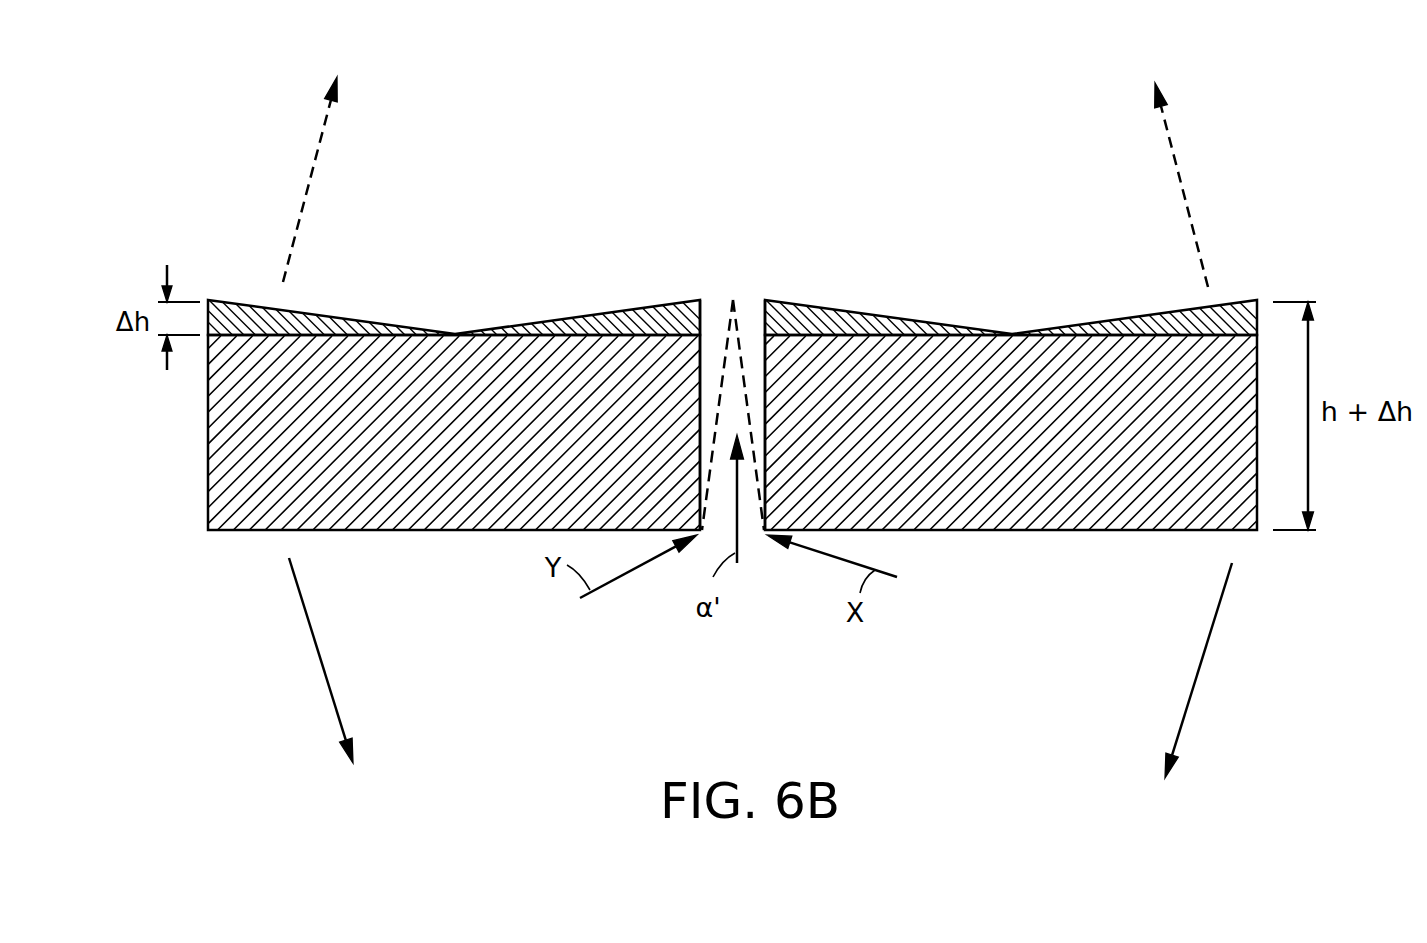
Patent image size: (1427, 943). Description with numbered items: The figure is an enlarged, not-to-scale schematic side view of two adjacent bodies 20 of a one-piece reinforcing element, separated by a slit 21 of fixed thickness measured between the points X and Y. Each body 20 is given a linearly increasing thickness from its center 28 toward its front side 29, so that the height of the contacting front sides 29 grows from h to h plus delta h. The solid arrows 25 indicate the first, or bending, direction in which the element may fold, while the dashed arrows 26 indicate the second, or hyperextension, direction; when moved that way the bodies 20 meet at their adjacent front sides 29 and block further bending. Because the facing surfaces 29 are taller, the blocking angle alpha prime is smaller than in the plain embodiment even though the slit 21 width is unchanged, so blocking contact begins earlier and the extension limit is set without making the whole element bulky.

The body 20 is at (463, 345).
The slit 21 is at (733, 300).
The solid arrows 25 is at (318, 642).
The dashed arrows 26 is at (313, 162).
The center 28 is at (448, 333).
The front side 29 is at (702, 353).